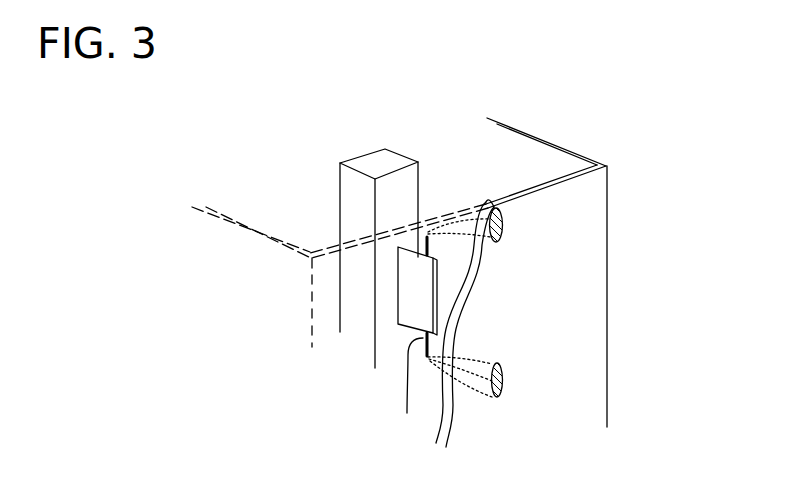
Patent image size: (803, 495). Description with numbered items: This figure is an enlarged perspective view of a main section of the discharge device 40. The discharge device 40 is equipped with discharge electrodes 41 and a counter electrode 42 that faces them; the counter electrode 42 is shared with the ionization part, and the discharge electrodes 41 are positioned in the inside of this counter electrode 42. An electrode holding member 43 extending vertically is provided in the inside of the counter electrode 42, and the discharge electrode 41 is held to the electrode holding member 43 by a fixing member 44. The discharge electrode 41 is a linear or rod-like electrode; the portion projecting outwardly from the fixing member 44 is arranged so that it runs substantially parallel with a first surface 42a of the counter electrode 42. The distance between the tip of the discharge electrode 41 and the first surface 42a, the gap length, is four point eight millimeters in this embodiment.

The discharge device 40 is at (577, 124).
The discharge electrode 41 is at (450, 324).
The counter electrode 42 is at (459, 296).
The first surface 42a is at (600, 378).
The electrode holding member 43 is at (366, 155).
The fixing member 44 is at (412, 285).